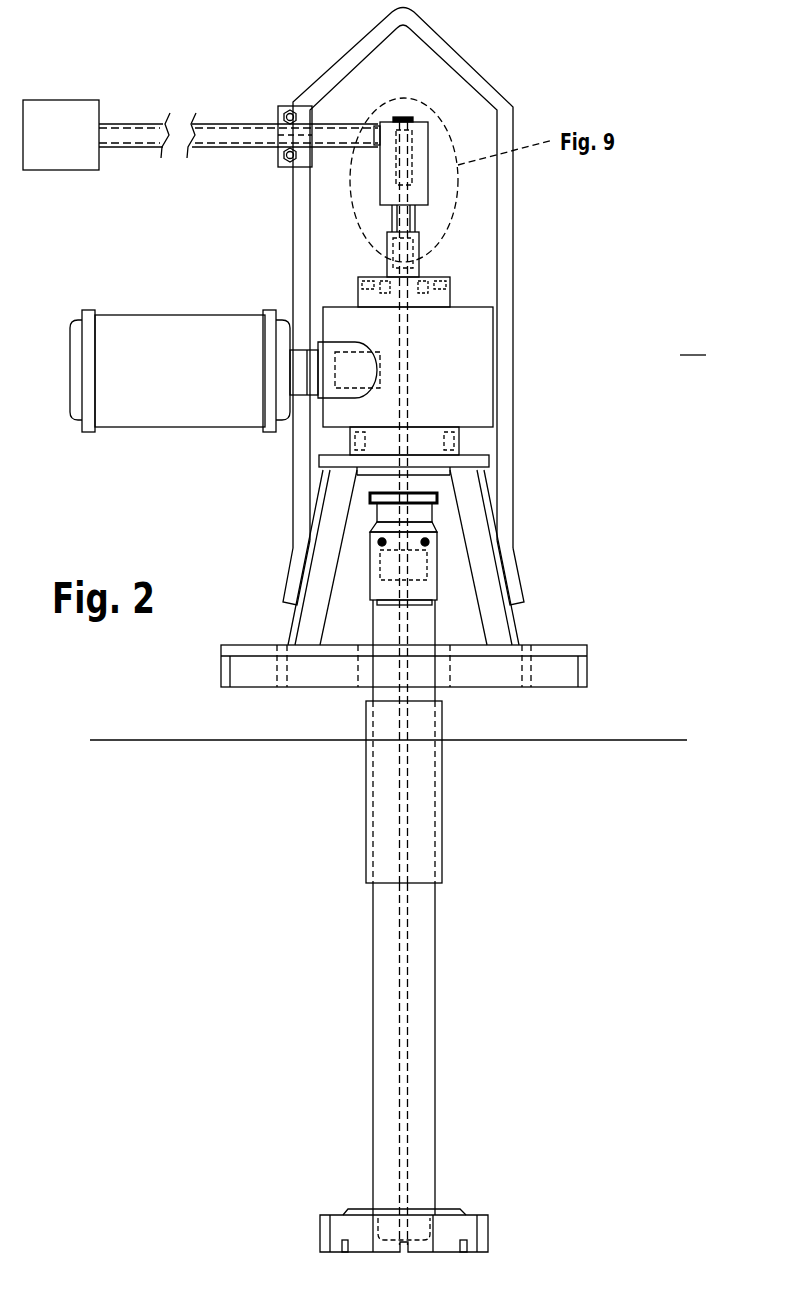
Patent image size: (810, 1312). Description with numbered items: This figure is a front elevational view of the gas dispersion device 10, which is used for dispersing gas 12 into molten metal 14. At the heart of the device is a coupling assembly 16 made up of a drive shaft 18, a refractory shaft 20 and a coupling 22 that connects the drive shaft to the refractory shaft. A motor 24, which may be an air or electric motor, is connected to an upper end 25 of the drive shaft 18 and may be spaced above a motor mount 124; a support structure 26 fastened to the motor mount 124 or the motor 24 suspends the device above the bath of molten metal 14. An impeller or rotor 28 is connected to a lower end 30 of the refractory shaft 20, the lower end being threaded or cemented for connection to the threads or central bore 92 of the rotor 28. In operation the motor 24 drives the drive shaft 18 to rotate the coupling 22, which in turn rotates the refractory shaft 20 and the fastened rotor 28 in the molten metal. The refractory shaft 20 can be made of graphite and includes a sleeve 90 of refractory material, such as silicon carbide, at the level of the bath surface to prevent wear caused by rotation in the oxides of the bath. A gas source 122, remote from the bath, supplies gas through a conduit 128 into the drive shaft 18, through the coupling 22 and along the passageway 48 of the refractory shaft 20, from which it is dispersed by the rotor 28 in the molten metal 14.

The gas dispersion device 10 is at (693, 341).
The gas 12 is at (602, 812).
The molten metal 14 is at (637, 803).
The coupling assembly 16 is at (577, 582).
The drive shaft 18 is at (403, 480).
The refractory shaft 20 is at (420, 693).
The coupling 22 is at (415, 562).
The motor 24 is at (470, 338).
The upper end of the drive shaft 25 is at (340, 410).
The support structure 26 is at (505, 363).
The rotor 28 is at (462, 1230).
The lower end of the refractory shaft 30 is at (420, 1170).
The passageway of the refractory shaft 48 is at (403, 1112).
The sleeve 90 is at (422, 818).
The central bore of the rotor 92 is at (387, 1223).
The gas source 122 is at (47, 122).
The motor mount 124 is at (580, 665).
The conduit 128 is at (118, 133).